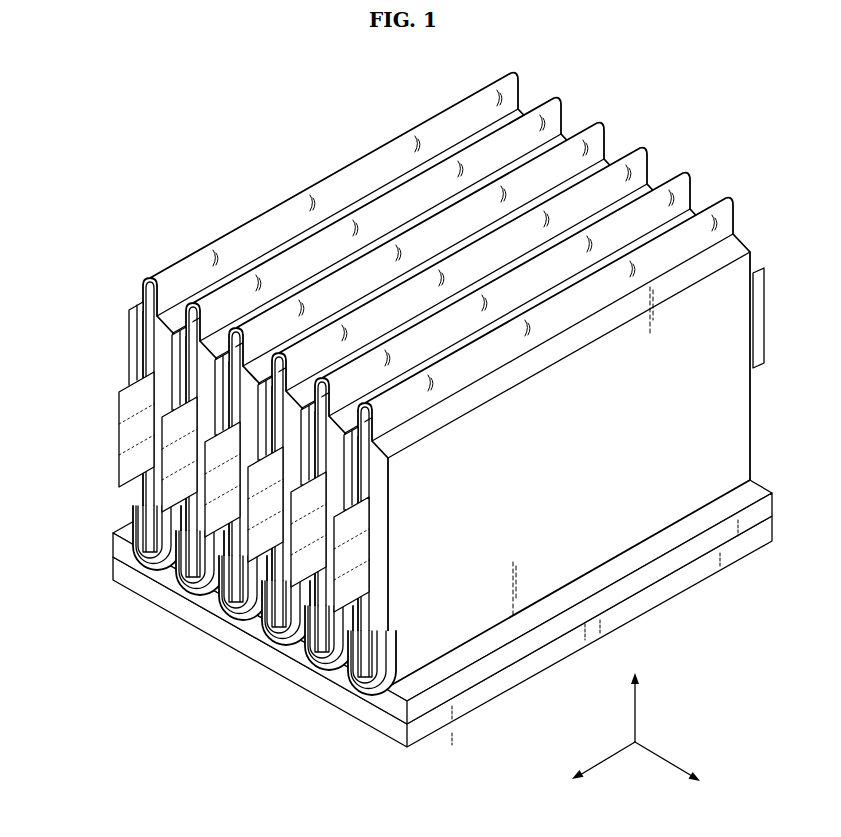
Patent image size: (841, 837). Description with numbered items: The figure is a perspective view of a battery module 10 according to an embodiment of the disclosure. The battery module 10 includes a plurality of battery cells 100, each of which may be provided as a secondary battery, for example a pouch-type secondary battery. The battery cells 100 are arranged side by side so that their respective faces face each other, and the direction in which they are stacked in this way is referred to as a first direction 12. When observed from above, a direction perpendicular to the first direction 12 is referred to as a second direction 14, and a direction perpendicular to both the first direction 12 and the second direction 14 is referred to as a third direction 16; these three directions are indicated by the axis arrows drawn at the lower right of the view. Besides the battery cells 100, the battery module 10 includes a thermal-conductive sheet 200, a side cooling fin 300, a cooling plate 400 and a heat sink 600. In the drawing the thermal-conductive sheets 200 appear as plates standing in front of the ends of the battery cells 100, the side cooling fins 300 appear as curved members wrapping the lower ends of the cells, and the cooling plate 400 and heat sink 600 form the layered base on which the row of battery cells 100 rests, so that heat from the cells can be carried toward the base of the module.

The battery module 10 is at (222, 89).
The battery cell 100 is at (173, 241).
The thermal-conductive sheet 200 is at (128, 351).
The side cooling fin 300 is at (129, 513).
The cooling plate 400 is at (113, 540).
The heat sink 600 is at (113, 569).
The first direction 12 is at (680, 770).
The second direction 14 is at (590, 770).
The third direction 16 is at (636, 692).